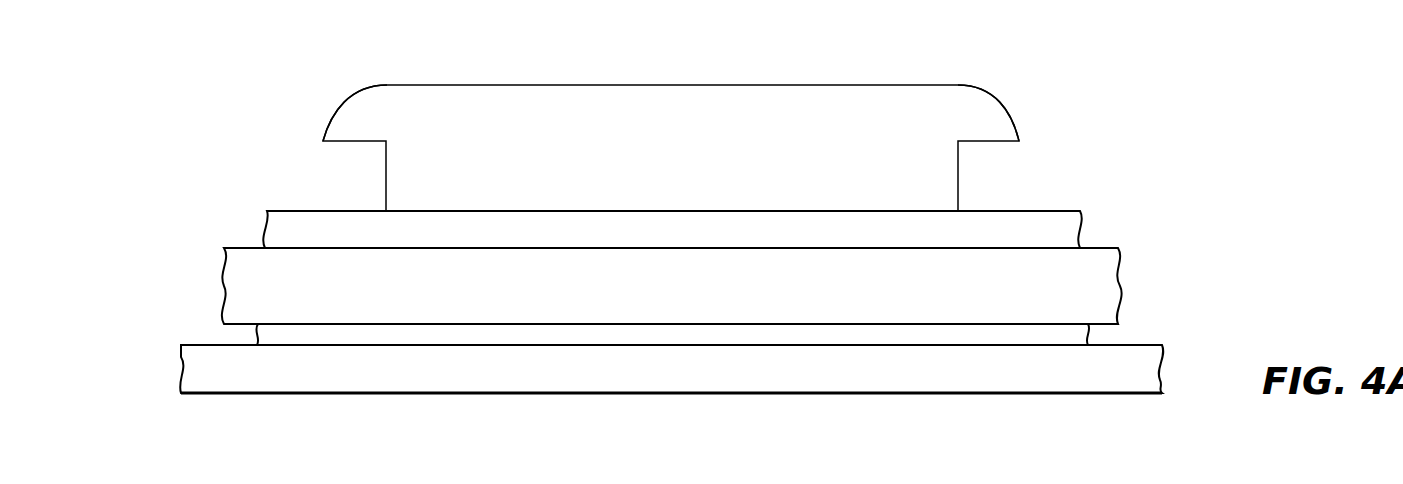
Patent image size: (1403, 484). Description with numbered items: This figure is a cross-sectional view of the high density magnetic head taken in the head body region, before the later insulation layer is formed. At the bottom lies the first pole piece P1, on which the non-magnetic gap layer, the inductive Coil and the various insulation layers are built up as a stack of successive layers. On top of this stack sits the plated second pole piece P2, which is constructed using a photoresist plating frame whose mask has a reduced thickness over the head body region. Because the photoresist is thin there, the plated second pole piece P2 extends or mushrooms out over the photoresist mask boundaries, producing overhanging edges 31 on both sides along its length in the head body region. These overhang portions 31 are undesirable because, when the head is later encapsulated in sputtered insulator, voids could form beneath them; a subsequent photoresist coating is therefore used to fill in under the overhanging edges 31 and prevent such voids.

The second pole piece P2 is at (742, 92).
The overhanging edges 31 is at (339, 117).
The coil layer Coil is at (1123, 271).
The first pole piece P1 is at (1166, 374).